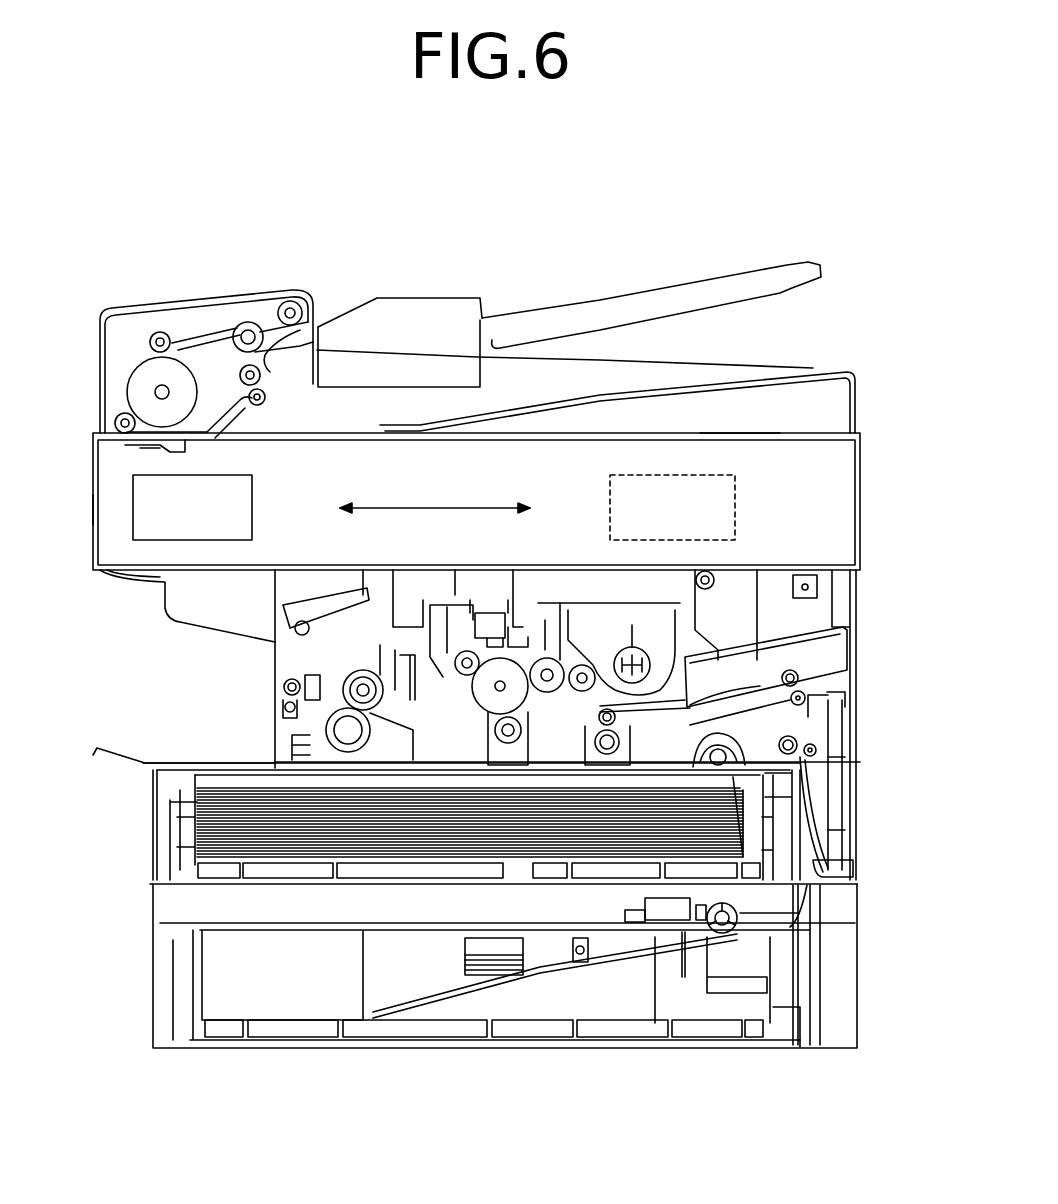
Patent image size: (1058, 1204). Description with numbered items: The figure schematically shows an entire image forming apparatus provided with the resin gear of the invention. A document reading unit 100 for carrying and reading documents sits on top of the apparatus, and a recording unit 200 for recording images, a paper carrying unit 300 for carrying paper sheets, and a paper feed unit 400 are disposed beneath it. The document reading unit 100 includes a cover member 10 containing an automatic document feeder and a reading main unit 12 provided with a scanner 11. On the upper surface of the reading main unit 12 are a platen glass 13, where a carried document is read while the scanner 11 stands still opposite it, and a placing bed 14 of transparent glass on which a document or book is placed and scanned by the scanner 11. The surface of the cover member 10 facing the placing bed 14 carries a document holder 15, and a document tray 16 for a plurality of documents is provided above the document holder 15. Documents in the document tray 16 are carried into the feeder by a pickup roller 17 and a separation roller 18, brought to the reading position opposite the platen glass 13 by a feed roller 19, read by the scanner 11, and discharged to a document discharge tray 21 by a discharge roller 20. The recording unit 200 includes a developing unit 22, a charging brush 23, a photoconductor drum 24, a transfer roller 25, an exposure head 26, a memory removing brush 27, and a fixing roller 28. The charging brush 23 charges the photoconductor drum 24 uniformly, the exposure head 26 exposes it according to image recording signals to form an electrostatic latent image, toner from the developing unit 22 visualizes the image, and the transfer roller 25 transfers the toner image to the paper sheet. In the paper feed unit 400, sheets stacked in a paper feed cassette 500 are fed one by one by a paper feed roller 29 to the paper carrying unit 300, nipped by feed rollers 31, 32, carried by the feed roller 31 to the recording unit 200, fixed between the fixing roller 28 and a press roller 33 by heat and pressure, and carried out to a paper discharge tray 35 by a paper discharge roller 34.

The document reading unit 100 is at (522, 226).
The cover member 10 is at (145, 303).
The scanner 11 is at (243, 502).
The reading main unit 12 is at (94, 516).
The platen glass 13 is at (150, 443).
The placing bed 14 is at (766, 441).
The document holder 15 is at (756, 432).
The document tray 16 is at (570, 310).
The pickup roller 17 is at (290, 304).
The separation roller 18 is at (243, 325).
The feed roller 19 is at (133, 387).
The discharge roller 20 is at (242, 374).
The document discharge tray 21 is at (722, 377).
The developing unit 22 is at (596, 608).
The charging brush 23 is at (462, 652).
The photoconductor drum 24 is at (470, 648).
The transfer roller 25 is at (513, 735).
The exposure head 26 is at (484, 612).
The memory removing brush 27 is at (468, 690).
The fixing roller 28 is at (350, 672).
The paper feed roller 29 is at (730, 748).
The feed roller 31 is at (613, 745).
The feed roller 32 is at (632, 703).
The press roller 33 is at (358, 731).
The paper discharge roller 34 is at (284, 687).
The paper discharge tray 35 is at (172, 762).
The recording unit 200 is at (540, 592).
The paper carrying unit 300 is at (876, 709).
The paper feed unit 400 is at (874, 840).
The paper feed cassette 500 is at (483, 878).